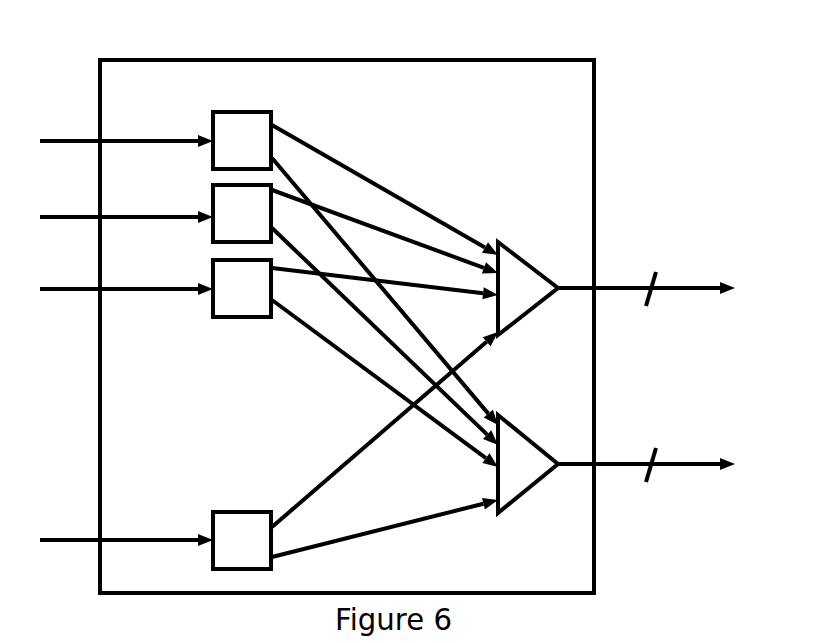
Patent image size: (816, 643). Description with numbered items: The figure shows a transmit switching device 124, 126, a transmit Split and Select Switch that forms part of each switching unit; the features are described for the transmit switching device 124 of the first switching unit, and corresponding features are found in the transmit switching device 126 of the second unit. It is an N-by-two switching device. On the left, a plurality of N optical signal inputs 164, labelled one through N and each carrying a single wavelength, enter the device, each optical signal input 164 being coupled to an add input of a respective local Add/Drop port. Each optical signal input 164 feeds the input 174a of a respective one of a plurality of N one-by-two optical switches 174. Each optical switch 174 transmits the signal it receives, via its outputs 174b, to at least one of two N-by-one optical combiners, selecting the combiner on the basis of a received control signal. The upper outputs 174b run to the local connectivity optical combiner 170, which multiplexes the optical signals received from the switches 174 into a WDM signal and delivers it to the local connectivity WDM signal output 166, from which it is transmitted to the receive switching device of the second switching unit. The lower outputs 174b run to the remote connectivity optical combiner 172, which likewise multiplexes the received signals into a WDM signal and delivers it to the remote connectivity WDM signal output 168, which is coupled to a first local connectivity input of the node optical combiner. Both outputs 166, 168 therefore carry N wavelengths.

The transmit switching device 124 is at (393, 326).
The transmit switching device 126 is at (594, 142).
The optical signal inputs 164 is at (67, 76).
The local connectivity WDM signal output 166 is at (594, 288).
The remote connectivity WDM signal output 168 is at (594, 464).
The local connectivity optical combiner 170 is at (525, 318).
The remote connectivity optical combiner 172 is at (525, 495).
The 1×2 optical switches 174 is at (241, 73).
The input 174a is at (212, 138).
The outputs 174b is at (272, 155).